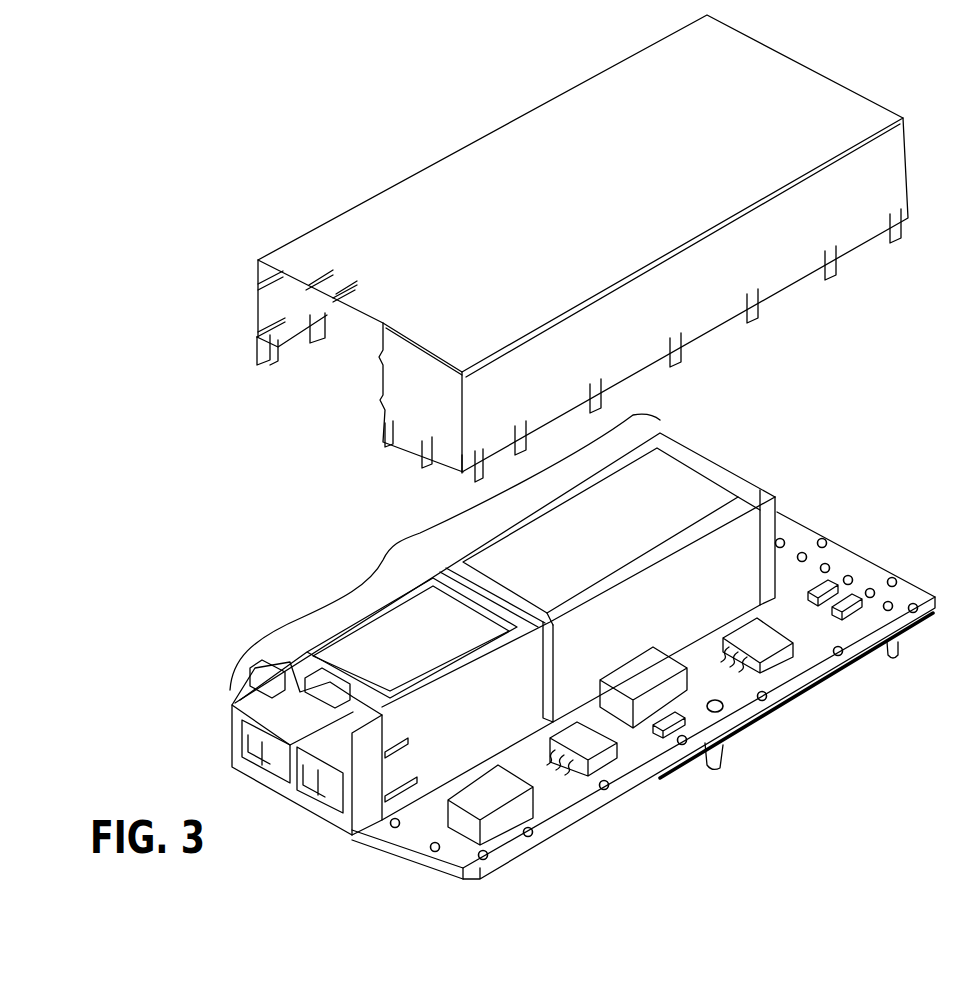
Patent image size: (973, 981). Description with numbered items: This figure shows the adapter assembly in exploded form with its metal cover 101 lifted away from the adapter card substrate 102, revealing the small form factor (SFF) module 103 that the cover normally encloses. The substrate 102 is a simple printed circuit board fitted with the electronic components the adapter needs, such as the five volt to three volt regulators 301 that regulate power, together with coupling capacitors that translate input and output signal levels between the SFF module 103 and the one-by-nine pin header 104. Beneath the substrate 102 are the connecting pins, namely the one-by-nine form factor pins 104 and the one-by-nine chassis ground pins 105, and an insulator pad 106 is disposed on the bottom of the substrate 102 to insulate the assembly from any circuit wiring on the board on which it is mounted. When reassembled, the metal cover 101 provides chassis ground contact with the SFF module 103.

The metal cover 101 is at (432, 185).
The adapter card substrate 102 is at (916, 592).
The small form factor (SFF) module 103 is at (383, 547).
The 1×9 form factor pins 104 is at (893, 657).
The 1×9 chassis ground pins 105 is at (722, 762).
The insulator pad 106 is at (817, 687).
The 5 volt to 3 volt regulators 301 is at (773, 662).